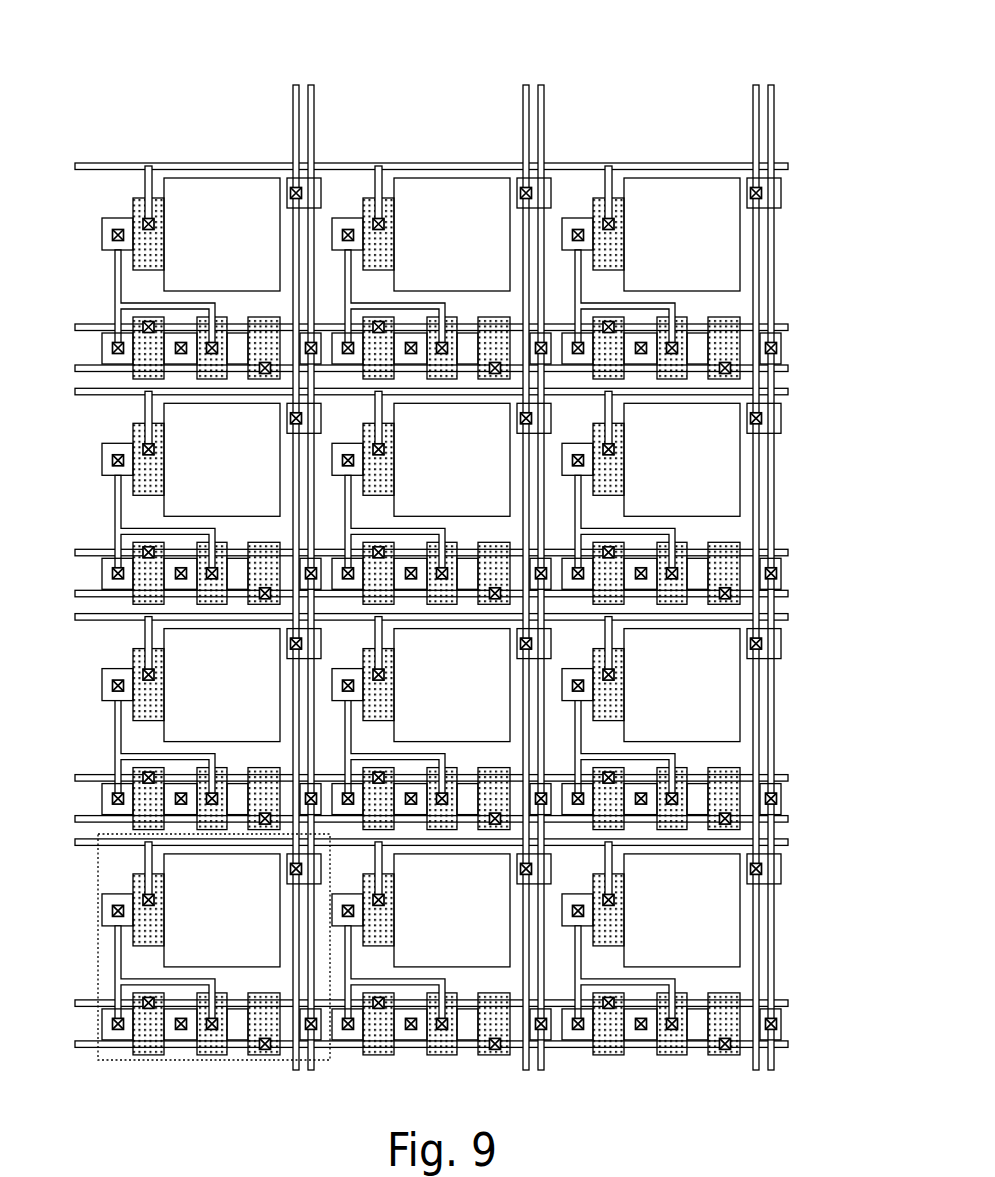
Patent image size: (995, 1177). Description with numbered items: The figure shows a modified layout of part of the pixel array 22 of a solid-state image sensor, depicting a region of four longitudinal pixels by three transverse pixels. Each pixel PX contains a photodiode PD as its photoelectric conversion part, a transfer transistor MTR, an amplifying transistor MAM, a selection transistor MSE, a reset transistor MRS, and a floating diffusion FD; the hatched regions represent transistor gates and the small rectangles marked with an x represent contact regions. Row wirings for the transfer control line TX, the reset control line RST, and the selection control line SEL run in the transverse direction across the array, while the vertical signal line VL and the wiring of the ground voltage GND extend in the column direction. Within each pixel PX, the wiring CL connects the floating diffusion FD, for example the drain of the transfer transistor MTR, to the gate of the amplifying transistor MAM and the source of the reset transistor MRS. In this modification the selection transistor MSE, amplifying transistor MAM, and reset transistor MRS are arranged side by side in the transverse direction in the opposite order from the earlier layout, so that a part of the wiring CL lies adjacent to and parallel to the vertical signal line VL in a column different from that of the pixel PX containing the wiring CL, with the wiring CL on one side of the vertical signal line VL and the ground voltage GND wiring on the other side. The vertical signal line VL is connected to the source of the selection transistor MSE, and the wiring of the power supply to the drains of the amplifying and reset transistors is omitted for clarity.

The pixel array 22 is at (78, 51).
The transfer control line TX is at (414, 505).
The reset control line RST is at (414, 665).
The selection control line SEL is at (414, 706).
The ground voltage wiring GND is at (516, 566).
The vertical signal line VL is at (314, 91).
The wiring CL is at (113, 268).
The photodiode PD is at (257, 254).
The floating diffusion FD is at (122, 213).
The transfer transistor MTR is at (136, 191).
The reset transistor MRS is at (173, 314).
The amplifying transistor MAM is at (221, 311).
The selection transistor MSE is at (254, 311).
The pixel PX is at (96, 967).